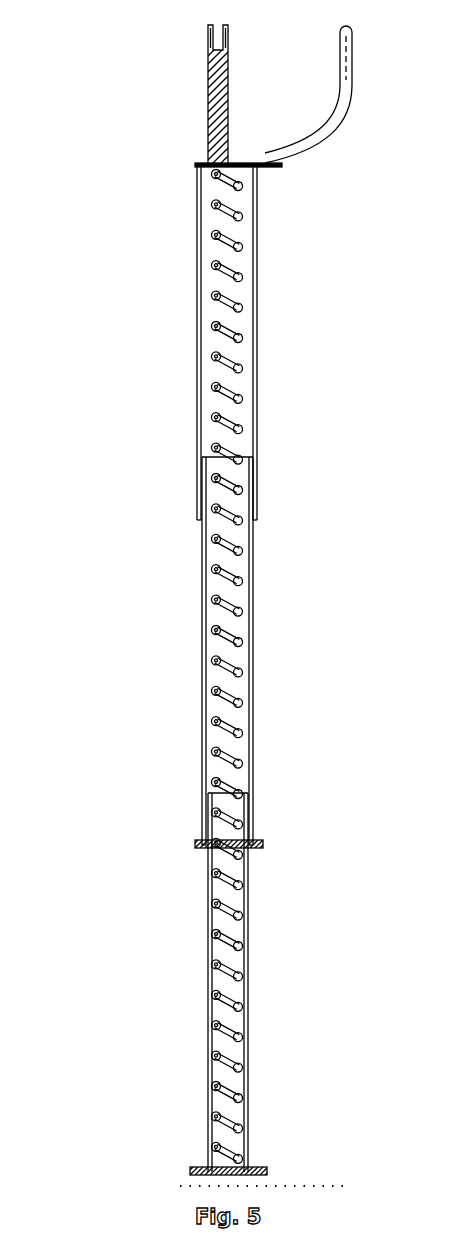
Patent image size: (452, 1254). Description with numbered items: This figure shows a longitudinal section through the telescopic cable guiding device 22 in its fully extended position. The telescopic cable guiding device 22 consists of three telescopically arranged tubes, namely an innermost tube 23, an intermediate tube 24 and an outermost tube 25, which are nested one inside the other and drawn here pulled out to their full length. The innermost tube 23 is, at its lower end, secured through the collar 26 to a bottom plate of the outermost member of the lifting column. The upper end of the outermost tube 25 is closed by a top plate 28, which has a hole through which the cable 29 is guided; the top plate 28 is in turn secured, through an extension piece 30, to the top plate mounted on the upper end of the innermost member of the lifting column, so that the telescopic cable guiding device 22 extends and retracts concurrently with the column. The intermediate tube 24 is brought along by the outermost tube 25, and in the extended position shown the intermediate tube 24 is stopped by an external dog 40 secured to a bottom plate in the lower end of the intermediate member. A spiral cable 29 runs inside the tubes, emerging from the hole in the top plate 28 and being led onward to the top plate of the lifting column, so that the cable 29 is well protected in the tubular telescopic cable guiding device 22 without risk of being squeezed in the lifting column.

The telescopic cable guiding device 22 is at (124, 192).
The innermost tube 23 is at (209, 1000).
The intermediate tube 24 is at (203, 656).
The outermost tube 25 is at (197, 289).
The collar 26 is at (192, 1167).
The top plate 28 is at (262, 167).
The spiral cable 29 is at (348, 86).
The extension piece 30 is at (209, 97).
The external dog 40 is at (195, 840).